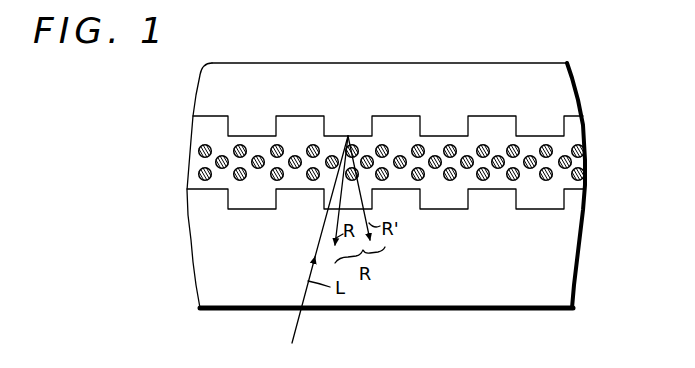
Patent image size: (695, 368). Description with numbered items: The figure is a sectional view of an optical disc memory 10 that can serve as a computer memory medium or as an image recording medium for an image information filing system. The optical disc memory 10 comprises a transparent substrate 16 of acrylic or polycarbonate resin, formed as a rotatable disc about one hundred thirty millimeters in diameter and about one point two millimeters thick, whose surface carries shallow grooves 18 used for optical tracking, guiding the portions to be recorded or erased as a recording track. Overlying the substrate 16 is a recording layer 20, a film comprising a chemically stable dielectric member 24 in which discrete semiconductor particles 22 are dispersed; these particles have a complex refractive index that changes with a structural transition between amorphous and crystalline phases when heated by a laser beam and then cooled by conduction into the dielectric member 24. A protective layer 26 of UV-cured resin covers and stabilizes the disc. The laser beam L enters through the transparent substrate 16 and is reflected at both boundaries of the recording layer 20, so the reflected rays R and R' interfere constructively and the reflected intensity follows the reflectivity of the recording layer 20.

The optical disc memory 10 is at (417, 195).
The transparent substrate 16 is at (482, 298).
The grooves 18 is at (452, 210).
The recording layer 20 is at (423, 183).
The semiconductor particles 22 is at (553, 180).
The dielectric member 24 is at (497, 125).
The protective layer 26 is at (558, 80).